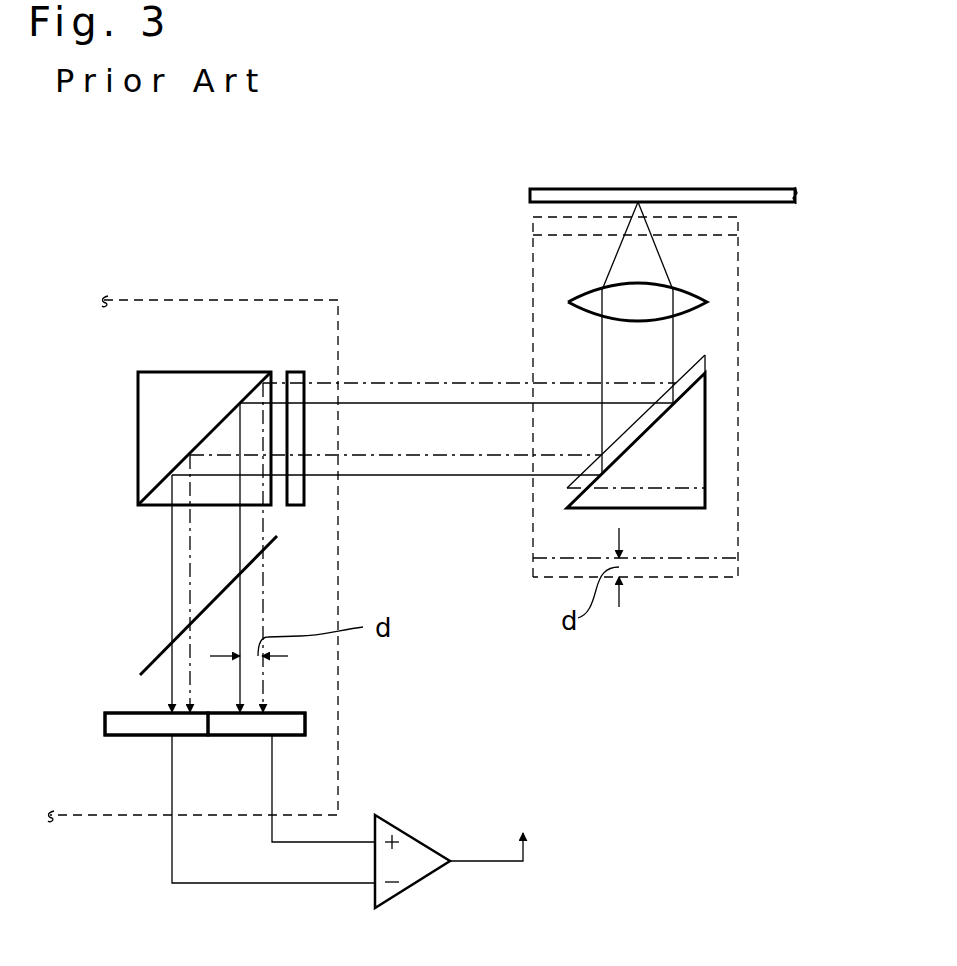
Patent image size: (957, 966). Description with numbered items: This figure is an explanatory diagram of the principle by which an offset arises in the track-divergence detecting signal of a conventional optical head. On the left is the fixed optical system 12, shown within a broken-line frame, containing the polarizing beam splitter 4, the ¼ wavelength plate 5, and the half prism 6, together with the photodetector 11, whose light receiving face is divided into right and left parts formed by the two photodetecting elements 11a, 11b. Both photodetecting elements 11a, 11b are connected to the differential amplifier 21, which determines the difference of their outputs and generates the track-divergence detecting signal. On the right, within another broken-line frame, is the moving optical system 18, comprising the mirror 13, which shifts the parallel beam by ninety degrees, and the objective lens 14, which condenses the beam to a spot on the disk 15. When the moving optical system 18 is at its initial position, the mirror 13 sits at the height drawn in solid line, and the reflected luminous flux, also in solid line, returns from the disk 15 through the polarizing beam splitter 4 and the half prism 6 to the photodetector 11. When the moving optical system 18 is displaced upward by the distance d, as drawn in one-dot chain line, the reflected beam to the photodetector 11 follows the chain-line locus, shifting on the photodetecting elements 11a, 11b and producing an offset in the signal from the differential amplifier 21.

The polarizing beam splitter 4 is at (188, 372).
The ¼ wavelength plate 5 is at (295, 372).
The half prism 6 is at (275, 543).
The photodetector 11 is at (250, 741).
The photodetecting element 11a is at (305, 722).
The photodetecting element 11b is at (135, 735).
The fixed optical system 12 is at (305, 300).
The mirror 13 is at (705, 437).
The objective lens 14 is at (703, 292).
The disk 15 is at (698, 187).
The moving optical system 18 is at (742, 560).
The differential amplifier 21 is at (418, 883).